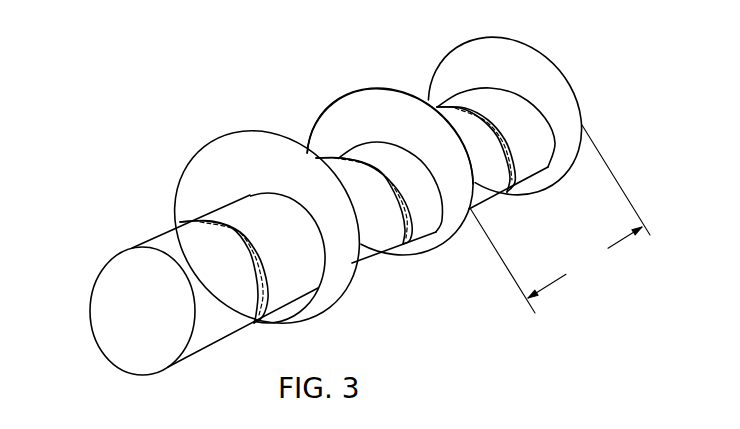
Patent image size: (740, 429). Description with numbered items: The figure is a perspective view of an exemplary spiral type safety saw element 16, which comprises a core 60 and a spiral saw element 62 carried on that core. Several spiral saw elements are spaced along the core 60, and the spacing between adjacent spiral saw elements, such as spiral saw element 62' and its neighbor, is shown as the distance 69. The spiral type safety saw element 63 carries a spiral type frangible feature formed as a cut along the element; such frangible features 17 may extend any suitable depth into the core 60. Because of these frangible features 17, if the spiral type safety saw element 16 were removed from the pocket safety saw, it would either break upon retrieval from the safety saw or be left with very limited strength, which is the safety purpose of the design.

The safety saw element 16 is at (125, 123).
The core 60 is at (320, 231).
The spiral saw element 62 is at (266, 226).
The spiral saw element 62' is at (360, 162).
The spiral type safety saw element 63 is at (386, 116).
The frangible features 17 is at (347, 217).
The distance 69 is at (560, 219).